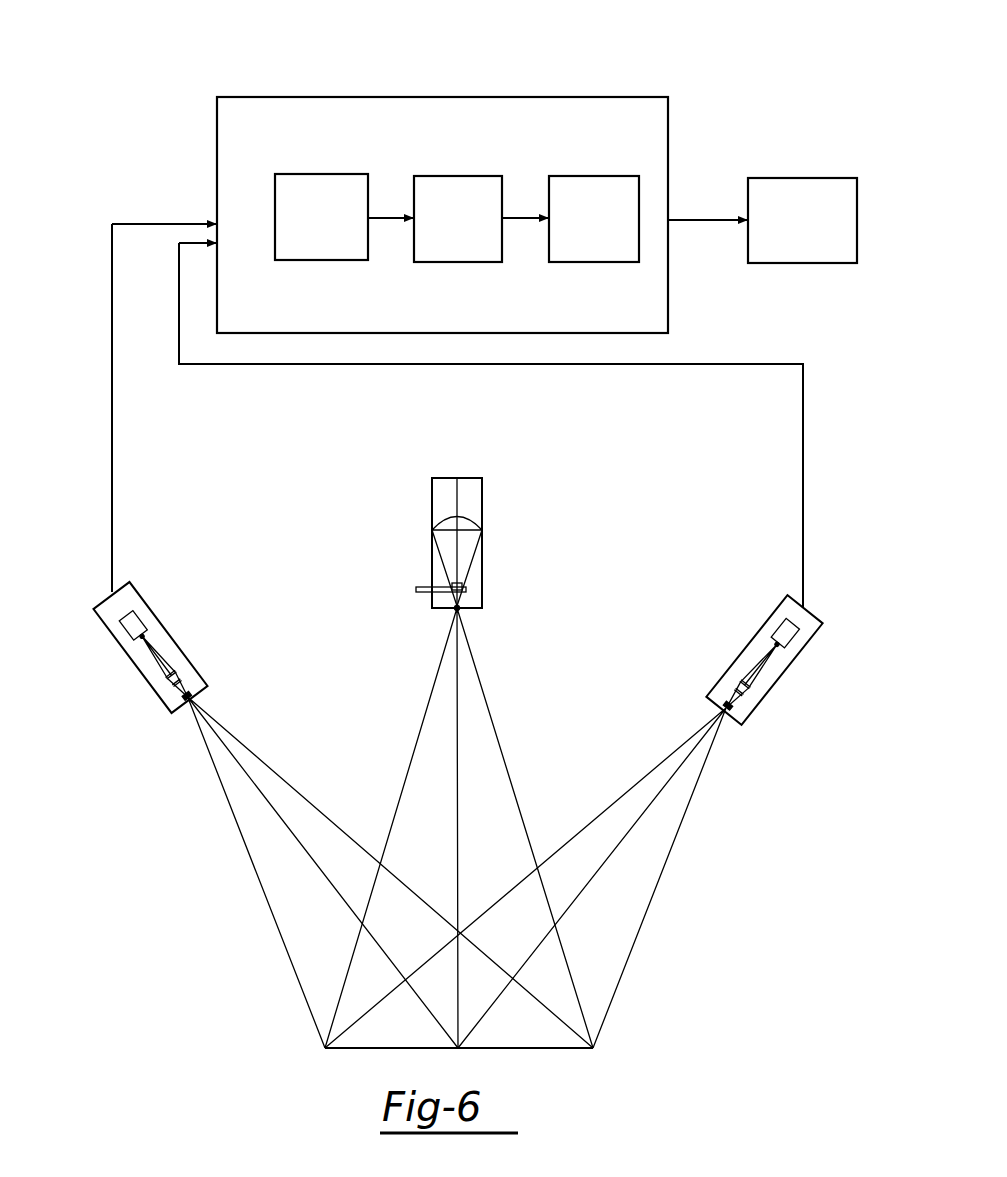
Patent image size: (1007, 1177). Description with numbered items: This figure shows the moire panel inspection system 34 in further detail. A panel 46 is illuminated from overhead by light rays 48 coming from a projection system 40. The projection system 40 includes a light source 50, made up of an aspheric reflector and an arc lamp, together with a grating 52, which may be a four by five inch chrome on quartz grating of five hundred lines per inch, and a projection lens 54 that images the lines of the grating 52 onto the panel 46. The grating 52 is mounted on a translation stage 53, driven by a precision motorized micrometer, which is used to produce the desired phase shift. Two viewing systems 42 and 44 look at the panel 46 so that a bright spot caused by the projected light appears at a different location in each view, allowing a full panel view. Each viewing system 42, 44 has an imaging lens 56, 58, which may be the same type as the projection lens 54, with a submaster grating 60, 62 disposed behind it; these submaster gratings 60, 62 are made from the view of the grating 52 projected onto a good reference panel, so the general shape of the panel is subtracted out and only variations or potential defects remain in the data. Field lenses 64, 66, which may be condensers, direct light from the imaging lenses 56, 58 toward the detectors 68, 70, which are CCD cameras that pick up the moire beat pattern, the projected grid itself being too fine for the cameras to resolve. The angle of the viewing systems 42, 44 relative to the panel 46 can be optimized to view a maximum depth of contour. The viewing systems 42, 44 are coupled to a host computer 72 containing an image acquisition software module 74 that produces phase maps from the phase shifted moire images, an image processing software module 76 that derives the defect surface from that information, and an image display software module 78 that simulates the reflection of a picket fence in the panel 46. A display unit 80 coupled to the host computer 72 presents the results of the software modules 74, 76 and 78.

The three-dimensional imaging system 34 is at (147, 130).
The host computer 72 is at (302, 96).
The image acquisition software module 74 is at (297, 174).
The image processing software module 76 is at (444, 176).
The image display software module 78 is at (576, 176).
The display unit 80 is at (792, 178).
The projection system 40 is at (474, 540).
The light source 50 is at (482, 520).
The grating 52 is at (462, 585).
The translation stage 53 is at (416, 592).
The projection lens 54 is at (460, 608).
The viewing system 44 is at (189, 632).
The viewing system 42 is at (746, 667).
The detector 68 is at (133, 625).
The detector 70 is at (785, 632).
The field lens 64 is at (171, 674).
The submaster grating 60 is at (176, 683).
The field lens 66 is at (745, 684).
The submaster grating 62 is at (738, 692).
The lens 56 is at (186, 695).
The lens 58 is at (727, 705).
The light rays 48 is at (430, 693).
The panel 46 is at (540, 1100).